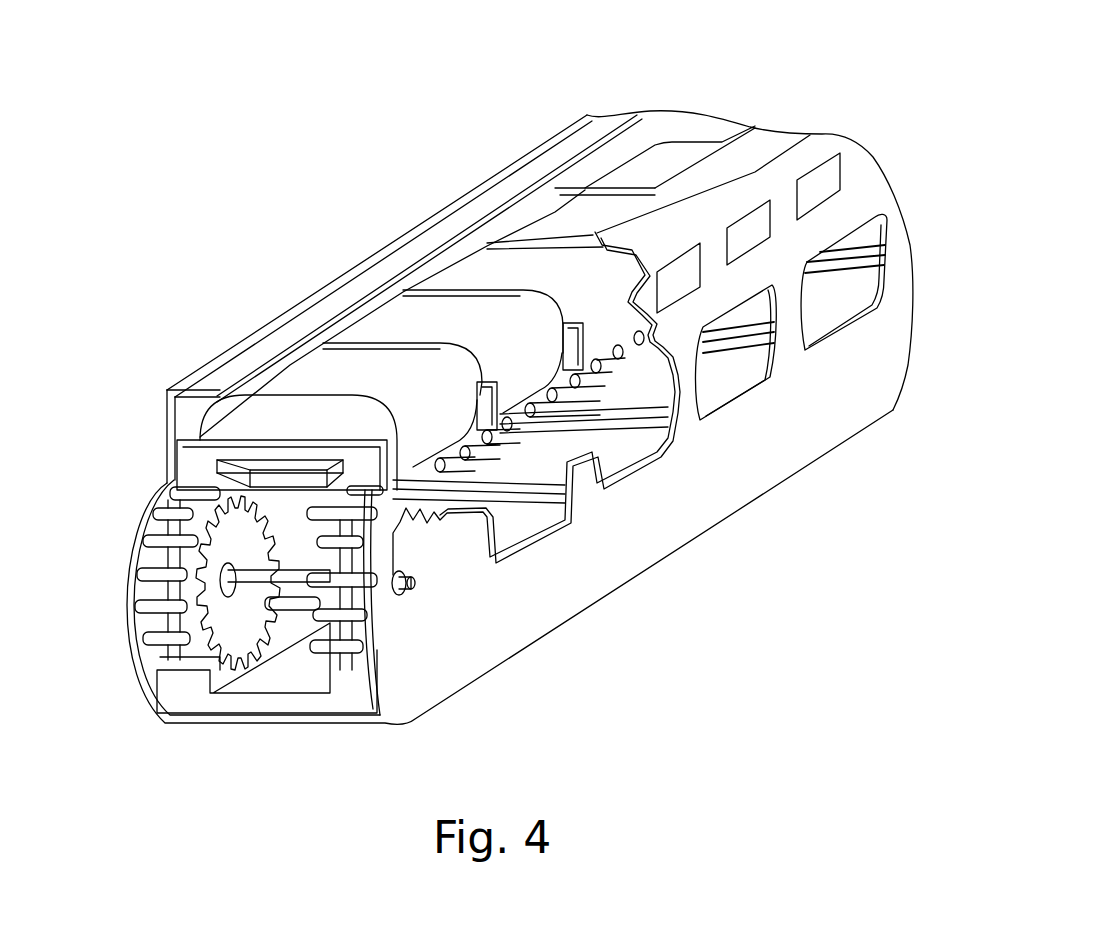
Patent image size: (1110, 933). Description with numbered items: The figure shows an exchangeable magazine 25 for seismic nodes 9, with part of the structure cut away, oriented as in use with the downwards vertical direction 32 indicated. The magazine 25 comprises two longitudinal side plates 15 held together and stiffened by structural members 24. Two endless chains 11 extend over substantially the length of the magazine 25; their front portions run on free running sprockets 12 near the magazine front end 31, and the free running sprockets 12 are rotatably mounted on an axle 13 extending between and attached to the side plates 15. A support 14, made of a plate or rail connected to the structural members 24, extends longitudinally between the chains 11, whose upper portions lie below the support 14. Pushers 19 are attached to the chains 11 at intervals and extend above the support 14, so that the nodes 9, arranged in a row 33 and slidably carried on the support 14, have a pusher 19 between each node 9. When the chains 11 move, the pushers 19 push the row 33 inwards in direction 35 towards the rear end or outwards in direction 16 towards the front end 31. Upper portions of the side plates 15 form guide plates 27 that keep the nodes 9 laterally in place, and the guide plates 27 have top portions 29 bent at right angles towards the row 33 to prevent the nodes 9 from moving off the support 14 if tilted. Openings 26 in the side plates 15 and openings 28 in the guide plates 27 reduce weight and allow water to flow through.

The node 9 is at (293, 373).
The endless chain 11 is at (145, 603).
The free running sprocket 12 is at (262, 578).
The axle 13 is at (200, 572).
The support 14 is at (282, 483).
The side plate 15 is at (807, 383).
The longitudinal direction 16 is at (760, 100).
The pusher 19 is at (233, 452).
The structural member 24 is at (610, 418).
The magazine 25 is at (420, 98).
The opening 26 is at (720, 373).
The guide plate 27 is at (837, 215).
The opening 28 is at (827, 178).
The top portion 29 is at (323, 312).
The magazine front end 31 is at (117, 600).
The downwards vertical direction 32 is at (188, 165).
The row 33 is at (490, 317).
The longitudinal direction 35 is at (802, 31).